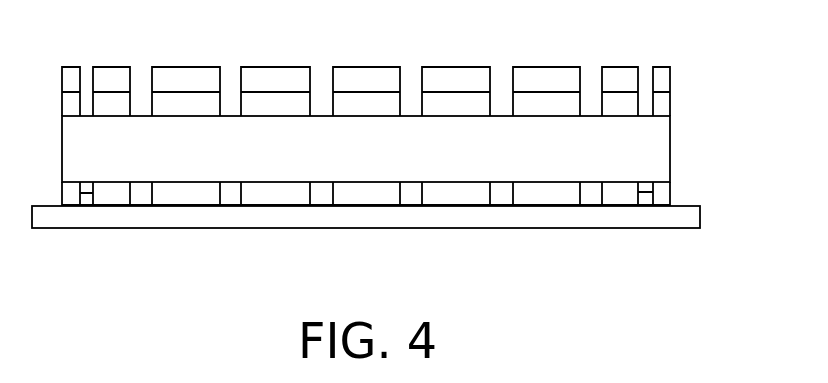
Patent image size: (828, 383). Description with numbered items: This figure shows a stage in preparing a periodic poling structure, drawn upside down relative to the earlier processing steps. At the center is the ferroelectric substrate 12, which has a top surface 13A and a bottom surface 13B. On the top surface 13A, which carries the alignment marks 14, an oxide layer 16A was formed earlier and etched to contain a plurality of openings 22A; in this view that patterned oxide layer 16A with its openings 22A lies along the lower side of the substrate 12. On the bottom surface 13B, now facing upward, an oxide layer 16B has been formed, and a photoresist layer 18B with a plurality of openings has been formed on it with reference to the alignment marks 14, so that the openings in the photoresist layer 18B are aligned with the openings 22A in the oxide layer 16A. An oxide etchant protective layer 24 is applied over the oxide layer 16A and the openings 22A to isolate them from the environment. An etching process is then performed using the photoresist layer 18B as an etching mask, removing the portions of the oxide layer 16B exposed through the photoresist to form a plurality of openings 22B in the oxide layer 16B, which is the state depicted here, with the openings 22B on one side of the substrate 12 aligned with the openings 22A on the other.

The ferroelectric substrate 12 is at (382, 158).
The top surface 13A is at (320, 184).
The bottom surface 13B is at (322, 116).
The alignment marks 14 is at (87, 195).
The oxide layer 16A is at (470, 193).
The oxide layer 16B is at (665, 102).
The photoresist layer 18B is at (562, 66).
The openings 22A is at (412, 193).
The openings 22B is at (502, 102).
The oxide etchant protective layer 24 is at (545, 213).